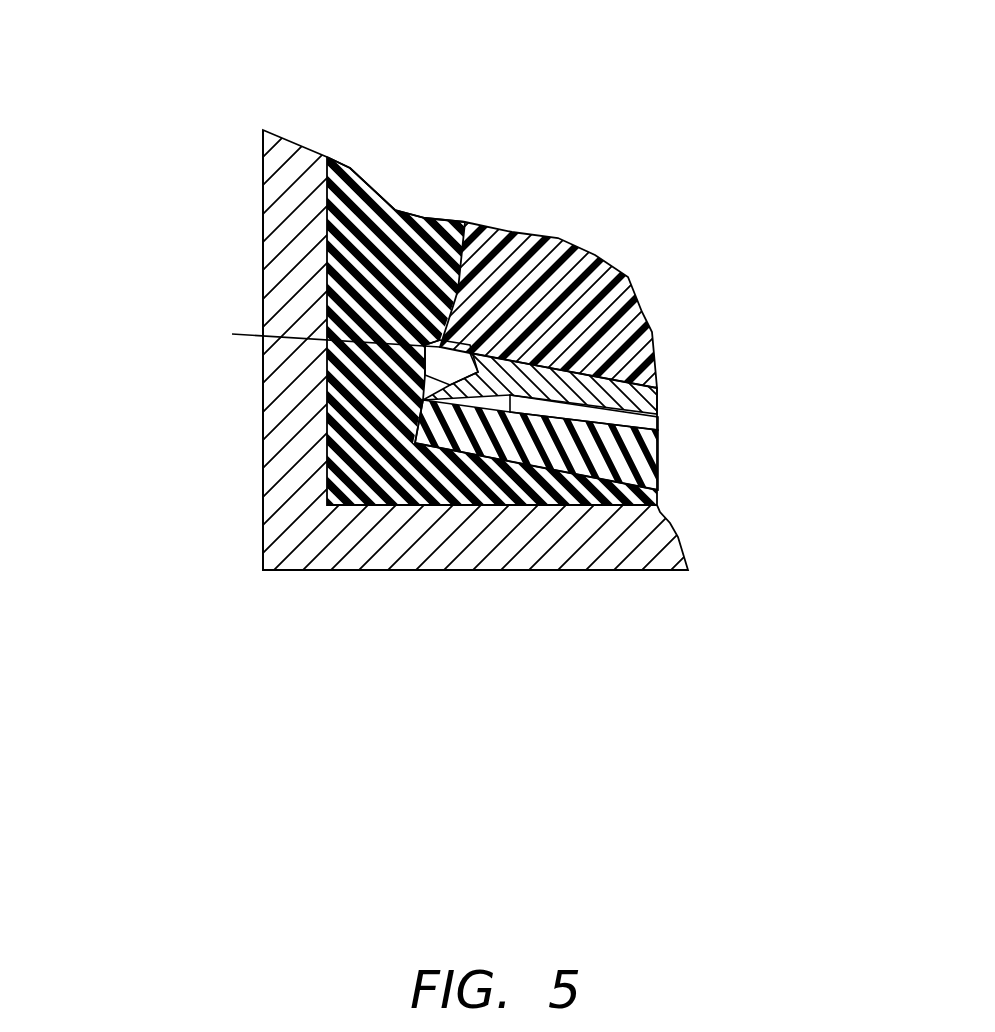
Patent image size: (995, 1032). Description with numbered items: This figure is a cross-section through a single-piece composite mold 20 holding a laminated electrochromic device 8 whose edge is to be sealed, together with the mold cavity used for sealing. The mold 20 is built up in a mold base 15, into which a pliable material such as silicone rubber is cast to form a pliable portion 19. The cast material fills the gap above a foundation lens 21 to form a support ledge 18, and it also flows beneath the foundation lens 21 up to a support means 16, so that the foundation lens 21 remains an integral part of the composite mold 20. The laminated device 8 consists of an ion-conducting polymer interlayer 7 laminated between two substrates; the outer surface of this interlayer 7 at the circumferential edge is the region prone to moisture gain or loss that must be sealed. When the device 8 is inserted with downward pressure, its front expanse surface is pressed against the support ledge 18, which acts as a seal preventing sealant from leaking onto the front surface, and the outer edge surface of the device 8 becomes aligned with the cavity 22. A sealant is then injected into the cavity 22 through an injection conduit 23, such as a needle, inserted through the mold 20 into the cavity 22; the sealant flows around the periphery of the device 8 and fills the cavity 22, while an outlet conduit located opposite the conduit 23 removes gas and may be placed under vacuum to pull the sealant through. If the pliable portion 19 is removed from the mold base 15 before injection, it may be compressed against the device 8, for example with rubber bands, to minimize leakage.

The mold 20 is at (180, 136).
The mold base 15 is at (318, 572).
The pliable portion 19 is at (413, 222).
The laminated electrochromic device 8 is at (625, 260).
The ion-conducting polymer interlayer 7 is at (662, 390).
The support ledge 18 is at (490, 393).
The injection conduit 23 is at (232, 334).
The cavity 22 is at (440, 350).
The foundation lens 21 is at (662, 470).
The support means 16 is at (622, 492).